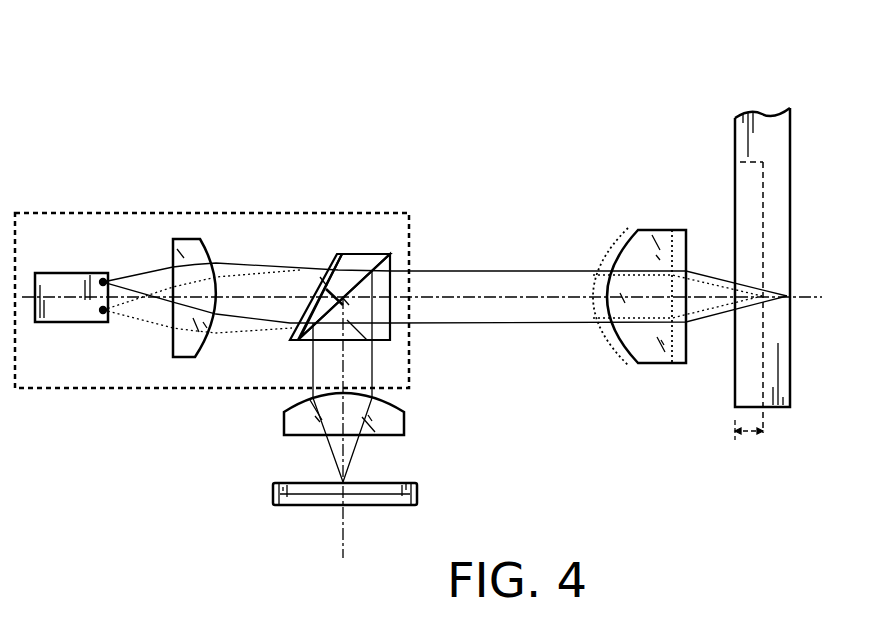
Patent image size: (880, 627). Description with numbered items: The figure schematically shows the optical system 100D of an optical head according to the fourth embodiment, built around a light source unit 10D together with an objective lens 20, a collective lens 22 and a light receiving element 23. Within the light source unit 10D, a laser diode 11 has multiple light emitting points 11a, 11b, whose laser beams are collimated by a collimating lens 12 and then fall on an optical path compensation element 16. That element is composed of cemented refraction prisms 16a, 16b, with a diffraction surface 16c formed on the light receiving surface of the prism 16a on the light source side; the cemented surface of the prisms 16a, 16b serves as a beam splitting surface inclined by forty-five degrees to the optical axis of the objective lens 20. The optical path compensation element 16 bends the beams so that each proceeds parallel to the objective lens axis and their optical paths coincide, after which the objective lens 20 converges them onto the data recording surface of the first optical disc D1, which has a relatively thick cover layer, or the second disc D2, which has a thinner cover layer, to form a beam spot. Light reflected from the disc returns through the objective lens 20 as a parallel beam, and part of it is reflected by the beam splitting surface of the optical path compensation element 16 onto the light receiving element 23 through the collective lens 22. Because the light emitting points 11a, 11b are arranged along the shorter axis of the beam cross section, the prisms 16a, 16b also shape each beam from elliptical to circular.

The optical system 100D is at (611, 79).
The light source unit 10D is at (195, 212).
The laser diode 11 is at (70, 311).
The light emitting point 11a is at (103, 279).
The light emitting point 11b is at (103, 313).
The collimating lens 12 is at (193, 342).
The optical path compensation element 16 is at (267, 173).
The refraction prism 16a is at (362, 258).
The refraction prism 16b is at (383, 282).
The diffraction surface 16c is at (333, 254).
The objective lens 20 is at (643, 350).
The collective lens 22 is at (392, 422).
The light receiving element 23 is at (330, 492).
The first optical disc D1 is at (782, 239).
The second disc D2 is at (736, 423).